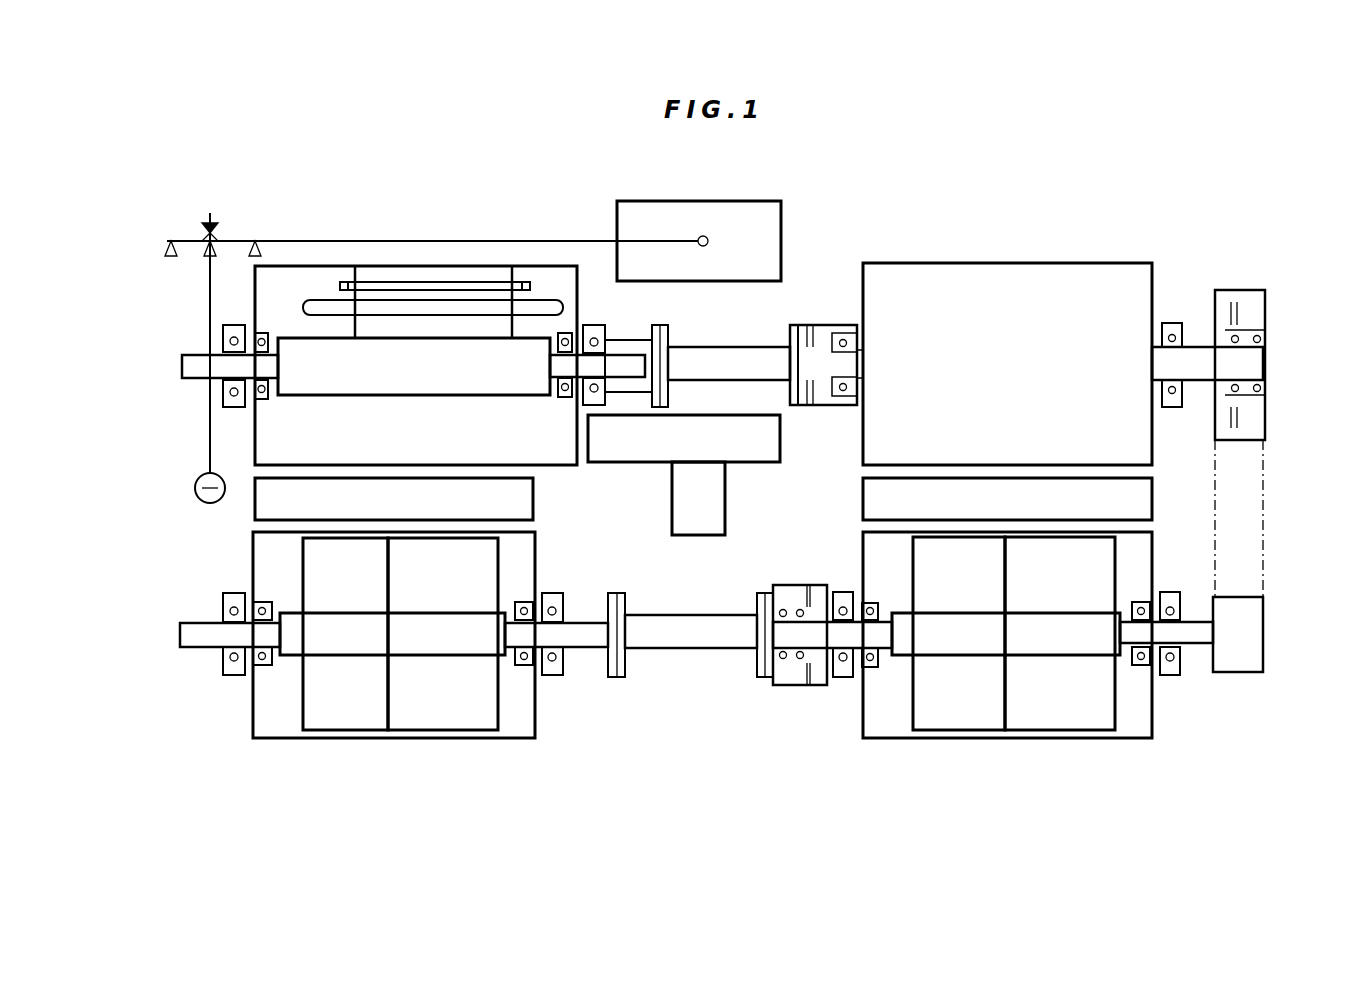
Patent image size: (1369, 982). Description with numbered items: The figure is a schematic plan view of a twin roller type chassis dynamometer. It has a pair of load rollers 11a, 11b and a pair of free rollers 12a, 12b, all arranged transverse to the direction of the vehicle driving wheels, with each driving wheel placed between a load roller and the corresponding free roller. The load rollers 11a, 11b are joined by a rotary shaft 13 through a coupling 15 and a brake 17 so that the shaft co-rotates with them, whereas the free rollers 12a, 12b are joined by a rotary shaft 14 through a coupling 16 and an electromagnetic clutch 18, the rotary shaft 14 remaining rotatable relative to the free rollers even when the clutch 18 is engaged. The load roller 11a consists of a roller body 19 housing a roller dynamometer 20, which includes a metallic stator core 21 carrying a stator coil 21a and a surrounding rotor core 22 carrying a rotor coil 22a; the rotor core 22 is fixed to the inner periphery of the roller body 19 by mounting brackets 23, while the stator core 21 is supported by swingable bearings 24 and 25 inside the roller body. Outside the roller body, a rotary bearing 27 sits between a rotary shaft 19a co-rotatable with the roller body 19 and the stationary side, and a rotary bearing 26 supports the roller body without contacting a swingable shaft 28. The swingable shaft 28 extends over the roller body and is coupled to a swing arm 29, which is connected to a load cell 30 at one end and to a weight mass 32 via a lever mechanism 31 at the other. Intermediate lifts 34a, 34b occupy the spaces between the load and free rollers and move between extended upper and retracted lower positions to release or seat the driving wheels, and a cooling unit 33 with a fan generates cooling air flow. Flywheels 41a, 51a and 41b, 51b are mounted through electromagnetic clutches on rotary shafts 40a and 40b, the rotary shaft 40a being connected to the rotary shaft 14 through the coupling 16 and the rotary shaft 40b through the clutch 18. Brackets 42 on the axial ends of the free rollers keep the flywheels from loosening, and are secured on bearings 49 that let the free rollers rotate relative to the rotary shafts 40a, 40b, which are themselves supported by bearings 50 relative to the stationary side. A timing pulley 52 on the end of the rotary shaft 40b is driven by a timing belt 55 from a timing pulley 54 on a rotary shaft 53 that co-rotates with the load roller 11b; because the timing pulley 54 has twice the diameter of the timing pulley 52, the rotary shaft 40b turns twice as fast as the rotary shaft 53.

The load roller 11a is at (429, 264).
The load roller 11b is at (1020, 262).
The free roller 12a is at (510, 742).
The free roller 12b is at (1008, 740).
The rotary shaft 13 is at (750, 348).
The rotary shaft 14 is at (698, 650).
The coupling 15 is at (670, 328).
The coupling 16 is at (620, 678).
The brake 17 is at (804, 326).
The electromagnetic clutch 18 is at (792, 686).
The roller body 19 is at (577, 468).
The rotary shaft 19a is at (627, 368).
The roller dynamometer 20 is at (432, 440).
The stator core 21 is at (455, 336).
The stator coil 21a is at (305, 307).
The rotor core 22 is at (388, 280).
The rotor coil 22a is at (343, 282).
The mounting bracket 23 is at (498, 270).
The swingable bearing 24 is at (268, 400).
The swingable bearing 25 is at (565, 398).
The rotary bearing 26 is at (224, 340).
The rotary bearing 27 is at (594, 325).
The swingable shaft 28 is at (205, 370).
The swing arm 29 is at (208, 278).
The load cell 30 is at (202, 478).
The lever mechanism 31 is at (268, 241).
The weight mass 32 is at (753, 226).
The cooling unit 33 is at (760, 450).
The intermediate lift 34a is at (533, 498).
The intermediate lift 34b is at (1137, 497).
The rotary shaft 40a is at (295, 647).
The rotary shaft 40b is at (1090, 650).
The flywheel 41a is at (458, 715).
The flywheel 41b is at (1057, 722).
The bracket 42 is at (255, 565).
The bearing 49 is at (262, 668).
The bearing 50 is at (232, 593).
The flywheel 51a is at (372, 712).
The flywheel 51b is at (950, 712).
The timing pulley 52 is at (1240, 655).
The rotary shaft 53 is at (1193, 355).
The timing pulley 54 is at (1240, 290).
The timing belt 55 is at (1262, 572).